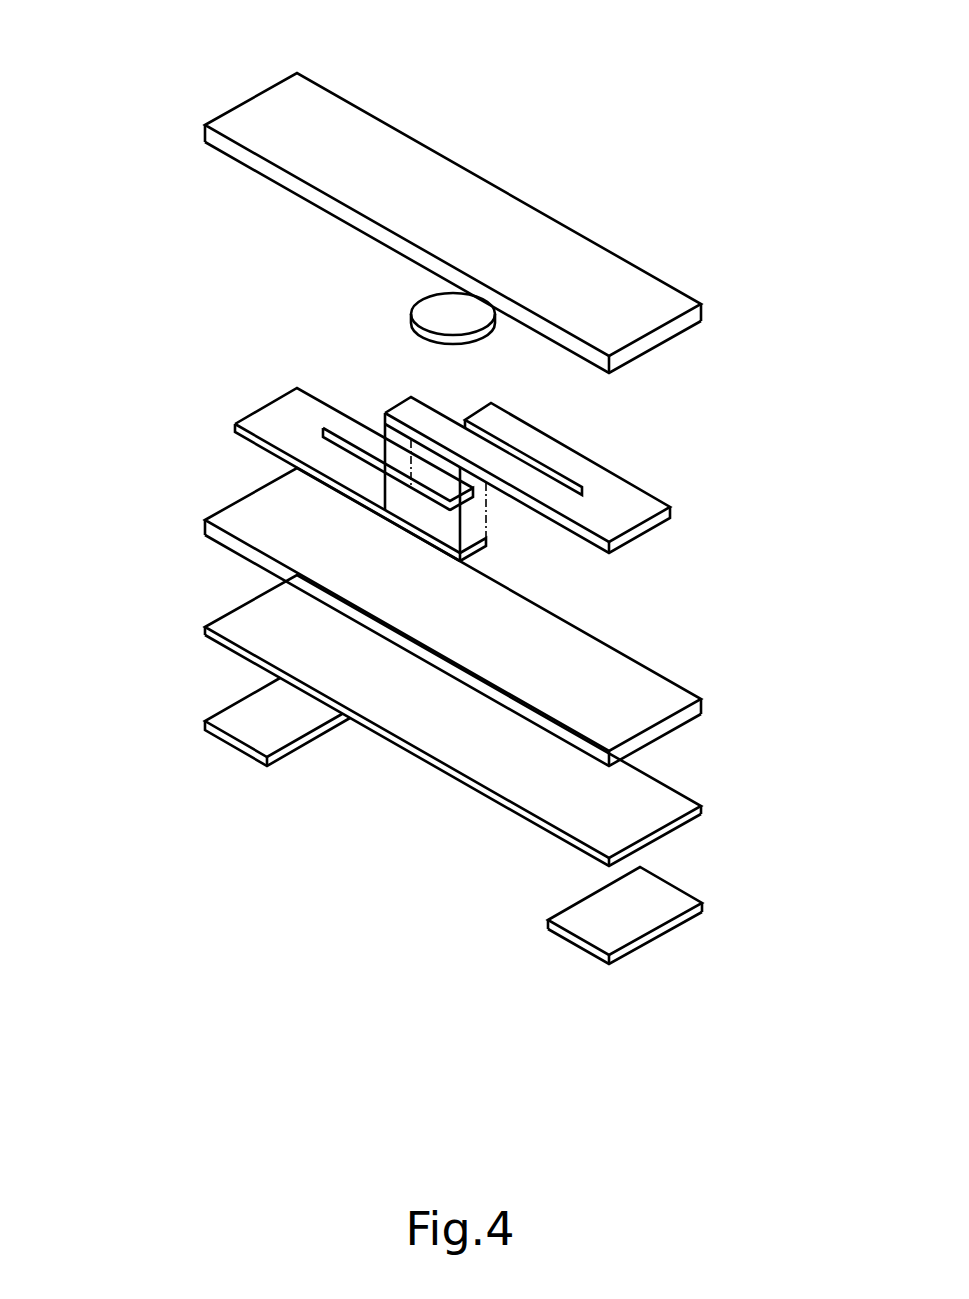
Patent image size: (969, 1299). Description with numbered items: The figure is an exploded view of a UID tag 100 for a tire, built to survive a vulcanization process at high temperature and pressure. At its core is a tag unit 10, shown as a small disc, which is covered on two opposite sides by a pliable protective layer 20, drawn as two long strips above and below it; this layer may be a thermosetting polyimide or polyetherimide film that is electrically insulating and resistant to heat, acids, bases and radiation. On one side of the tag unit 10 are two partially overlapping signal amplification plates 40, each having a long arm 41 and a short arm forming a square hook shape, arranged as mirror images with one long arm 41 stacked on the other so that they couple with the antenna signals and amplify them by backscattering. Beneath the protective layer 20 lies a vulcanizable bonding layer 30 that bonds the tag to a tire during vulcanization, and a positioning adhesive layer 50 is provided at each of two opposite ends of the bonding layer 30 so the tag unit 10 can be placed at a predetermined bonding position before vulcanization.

The UID tag 100 is at (803, 31).
The tag unit 10 is at (412, 309).
The pliable protective layer 20 is at (487, 219).
The vulcanizable bonding layer 30 is at (620, 808).
The signal amplification plate 40 is at (264, 412).
The long arm 41 is at (413, 412).
The positioning adhesive layer 50 is at (615, 912).